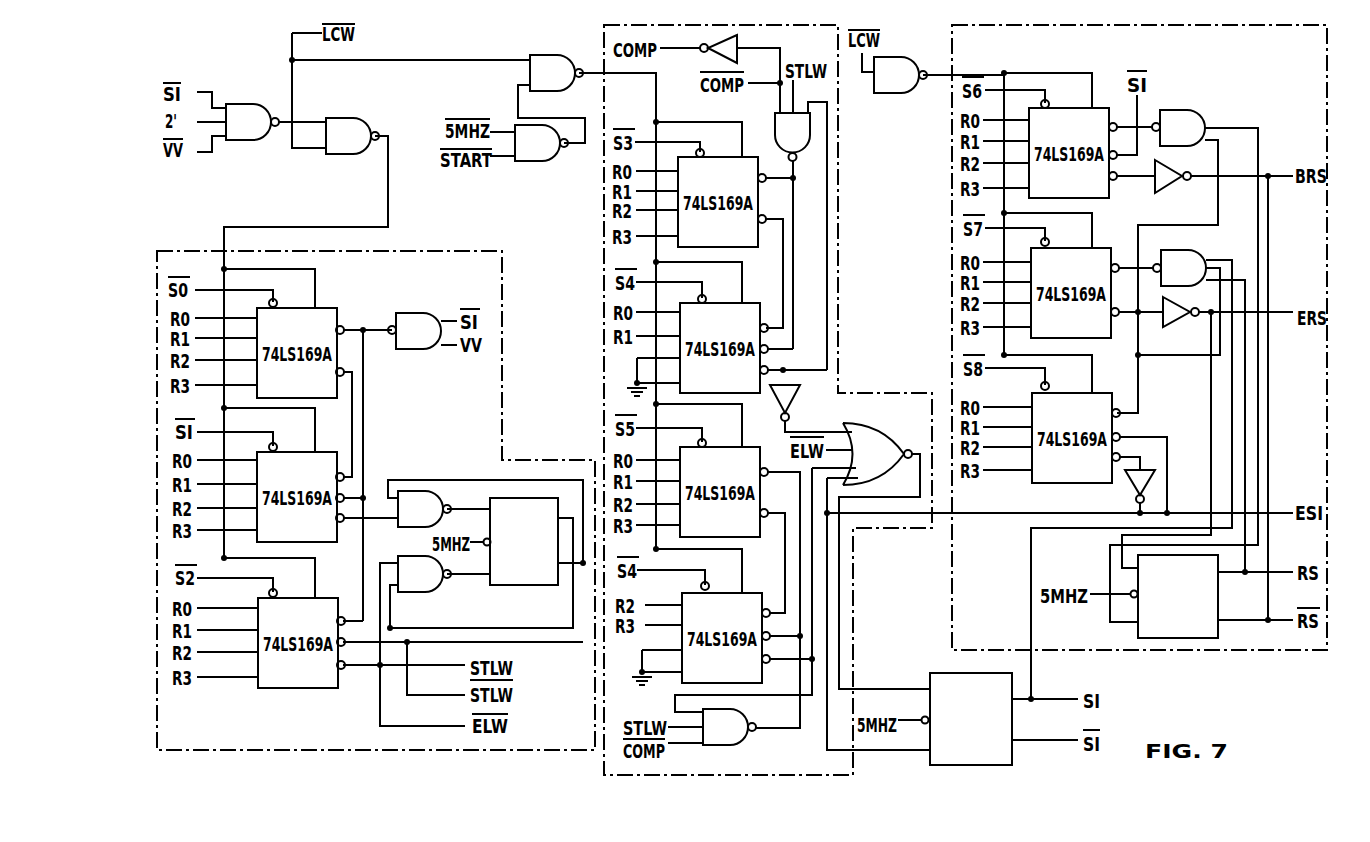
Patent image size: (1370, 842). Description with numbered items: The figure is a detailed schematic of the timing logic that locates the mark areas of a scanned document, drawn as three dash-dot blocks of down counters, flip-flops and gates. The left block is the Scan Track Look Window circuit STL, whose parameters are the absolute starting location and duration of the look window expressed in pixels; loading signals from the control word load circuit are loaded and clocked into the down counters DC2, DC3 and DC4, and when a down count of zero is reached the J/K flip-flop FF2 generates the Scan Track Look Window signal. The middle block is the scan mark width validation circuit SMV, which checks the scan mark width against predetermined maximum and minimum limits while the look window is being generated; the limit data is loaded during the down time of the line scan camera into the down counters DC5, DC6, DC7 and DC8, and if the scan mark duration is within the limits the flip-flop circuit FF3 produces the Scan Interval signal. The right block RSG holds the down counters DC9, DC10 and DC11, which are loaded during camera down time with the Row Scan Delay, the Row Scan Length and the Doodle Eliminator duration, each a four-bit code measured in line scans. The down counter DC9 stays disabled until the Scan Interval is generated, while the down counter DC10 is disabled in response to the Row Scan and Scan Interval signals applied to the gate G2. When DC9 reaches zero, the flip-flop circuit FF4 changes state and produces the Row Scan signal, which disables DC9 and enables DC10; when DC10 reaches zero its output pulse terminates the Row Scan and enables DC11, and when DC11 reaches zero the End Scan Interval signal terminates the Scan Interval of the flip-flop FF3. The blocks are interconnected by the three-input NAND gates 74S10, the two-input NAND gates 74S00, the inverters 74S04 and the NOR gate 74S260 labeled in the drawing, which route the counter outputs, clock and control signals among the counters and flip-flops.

The down counter DC2 is at (333, 307).
The down counter DC3 is at (330, 452).
The down counter DC4 is at (332, 598).
The down counter DC5 is at (755, 156).
The down counter DC6 is at (755, 303).
The down counter DC7 is at (757, 447).
The down counter DC8 is at (755, 592).
The down counter DC9 is at (1106, 108).
The down counter DC10 is at (1108, 247).
The down counter DC11 is at (1110, 392).
The J/K flip-flop FF2 is at (558, 587).
The flip-flop circuit FF3 is at (930, 673).
The flip-flop circuit FF4 is at (1135, 628).
The gate G2 is at (1170, 242).
The 3-input NAND gate 74S10 is at (326, 118).
The 2-input NAND gate 74S00 is at (541, 100).
The inverter 74S04 is at (1165, 193).
The NOR gate 74S260 is at (857, 440).
The Scan Track Look Window circuit STL is at (506, 238).
The scan mark width validation circuit SMV is at (600, 30).
The reset signal generator block RSG is at (1255, 653).